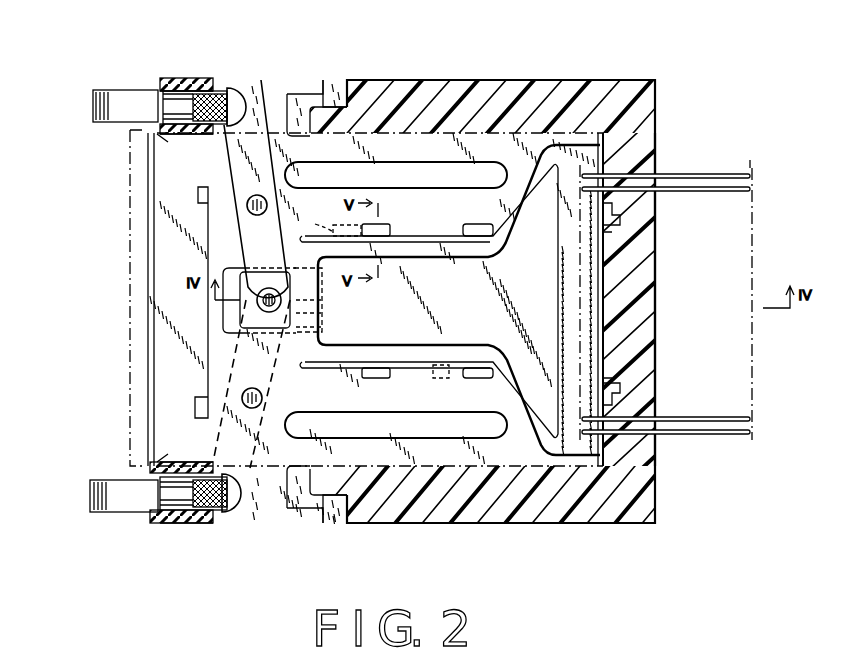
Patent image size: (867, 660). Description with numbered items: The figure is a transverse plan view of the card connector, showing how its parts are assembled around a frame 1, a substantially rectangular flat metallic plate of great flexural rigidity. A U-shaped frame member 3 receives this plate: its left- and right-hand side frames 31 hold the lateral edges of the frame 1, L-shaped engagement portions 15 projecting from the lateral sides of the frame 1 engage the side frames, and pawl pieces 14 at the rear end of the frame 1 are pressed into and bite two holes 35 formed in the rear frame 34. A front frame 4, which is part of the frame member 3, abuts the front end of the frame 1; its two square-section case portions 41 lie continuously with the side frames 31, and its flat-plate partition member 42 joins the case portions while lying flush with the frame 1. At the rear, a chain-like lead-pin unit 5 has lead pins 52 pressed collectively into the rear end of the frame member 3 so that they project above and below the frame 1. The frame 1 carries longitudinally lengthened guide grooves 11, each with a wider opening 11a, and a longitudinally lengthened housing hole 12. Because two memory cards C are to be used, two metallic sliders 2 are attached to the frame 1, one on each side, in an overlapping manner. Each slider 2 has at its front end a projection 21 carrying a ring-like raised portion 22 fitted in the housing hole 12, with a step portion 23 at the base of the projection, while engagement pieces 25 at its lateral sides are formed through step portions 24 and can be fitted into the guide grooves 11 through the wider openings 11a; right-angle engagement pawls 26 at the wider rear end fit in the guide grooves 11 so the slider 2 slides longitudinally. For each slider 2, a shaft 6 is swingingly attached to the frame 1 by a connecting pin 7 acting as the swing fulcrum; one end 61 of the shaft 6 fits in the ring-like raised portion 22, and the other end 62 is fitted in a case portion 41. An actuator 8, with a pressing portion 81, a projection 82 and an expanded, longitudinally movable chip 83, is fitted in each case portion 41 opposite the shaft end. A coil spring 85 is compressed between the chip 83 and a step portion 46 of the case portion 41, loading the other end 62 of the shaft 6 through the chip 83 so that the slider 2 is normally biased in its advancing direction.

The frame 1 is at (517, 134).
The slider 2 is at (450, 236).
The frame member 3 is at (617, 78).
The side frame 31 is at (378, 79).
The rear frame 34 is at (650, 298).
The hole 35 is at (606, 233).
The front frame 4 is at (157, 78).
The case portion 41 is at (205, 90).
The partition member 42 is at (148, 290).
The step portion 46 is at (163, 142).
The lead-pin unit 5 is at (750, 150).
The lead pin 52 is at (583, 230).
The shaft 6 is at (236, 178).
The one end of shaft 61 is at (300, 325).
The other end of shaft 62 is at (270, 88).
The connecting pin 7 is at (247, 208).
The actuator 8 is at (90, 103).
The pressing portion 81 is at (112, 90).
The projection 82 is at (180, 91).
The chip 83 is at (236, 88).
The coil spring 85 is at (212, 132).
The guide groove 11 is at (426, 236).
The wider opening 11a is at (386, 225).
The housing hole 12 is at (224, 268).
The pawl piece 14 is at (618, 218).
The L-shaped engagement portion 15 is at (330, 90).
The projection 21 is at (240, 330).
The ring-like raised portion 22 is at (270, 288).
The step portion 23 is at (298, 303).
The step portion 24 is at (346, 226).
The engagement piece 25 is at (320, 226).
The engagement pawl 26 is at (620, 142).
The memory card C is at (158, 233).